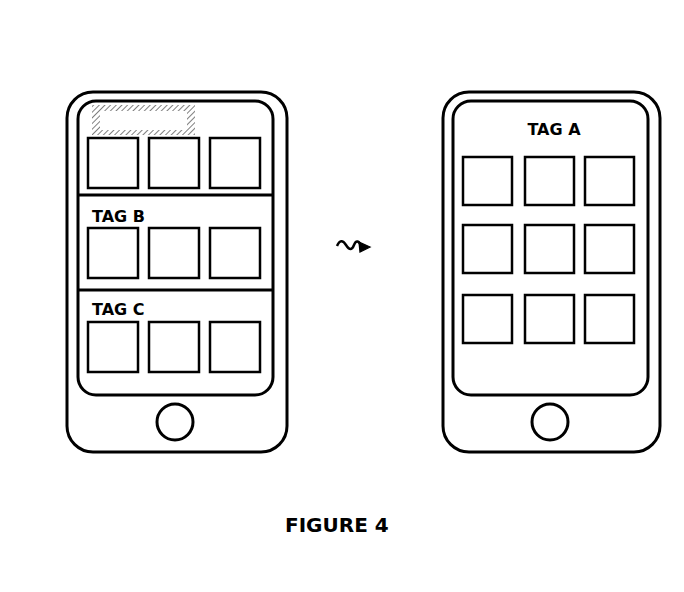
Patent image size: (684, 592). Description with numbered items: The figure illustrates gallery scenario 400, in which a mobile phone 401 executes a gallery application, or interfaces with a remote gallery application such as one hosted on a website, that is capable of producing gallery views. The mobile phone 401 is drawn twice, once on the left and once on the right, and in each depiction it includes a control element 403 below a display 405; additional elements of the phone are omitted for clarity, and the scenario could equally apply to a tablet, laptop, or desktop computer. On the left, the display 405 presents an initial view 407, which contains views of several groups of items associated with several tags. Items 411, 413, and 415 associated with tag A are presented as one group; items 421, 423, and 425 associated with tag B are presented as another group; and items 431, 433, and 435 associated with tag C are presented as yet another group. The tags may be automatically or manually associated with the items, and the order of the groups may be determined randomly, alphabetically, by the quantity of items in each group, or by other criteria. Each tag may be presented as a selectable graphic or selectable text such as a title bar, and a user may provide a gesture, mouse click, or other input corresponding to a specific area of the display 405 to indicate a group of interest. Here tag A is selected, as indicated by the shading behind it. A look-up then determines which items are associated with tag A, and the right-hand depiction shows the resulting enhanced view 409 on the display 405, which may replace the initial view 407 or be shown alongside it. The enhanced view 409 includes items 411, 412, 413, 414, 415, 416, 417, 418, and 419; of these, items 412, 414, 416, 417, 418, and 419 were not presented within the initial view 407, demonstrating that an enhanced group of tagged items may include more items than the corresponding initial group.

The gallery scenario 400 is at (62, 52).
The mobile phone 401 is at (68, 312).
The control element 403 is at (156, 426).
The display 405 is at (247, 396).
The initial view 407 is at (243, 132).
The enhanced view 409 is at (555, 380).
The item 411 is at (97, 172).
The item 412 is at (533, 190).
The item 413 is at (158, 172).
The item 414 is at (471, 258).
The item 415 is at (219, 172).
The item 416 is at (593, 258).
The item 417 is at (471, 328).
The item 418 is at (533, 328).
The item 419 is at (593, 328).
The item 421 is at (97, 262).
The item 423 is at (158, 262).
The item 425 is at (219, 262).
The item 431 is at (97, 356).
The item 433 is at (158, 356).
The item 435 is at (219, 356).